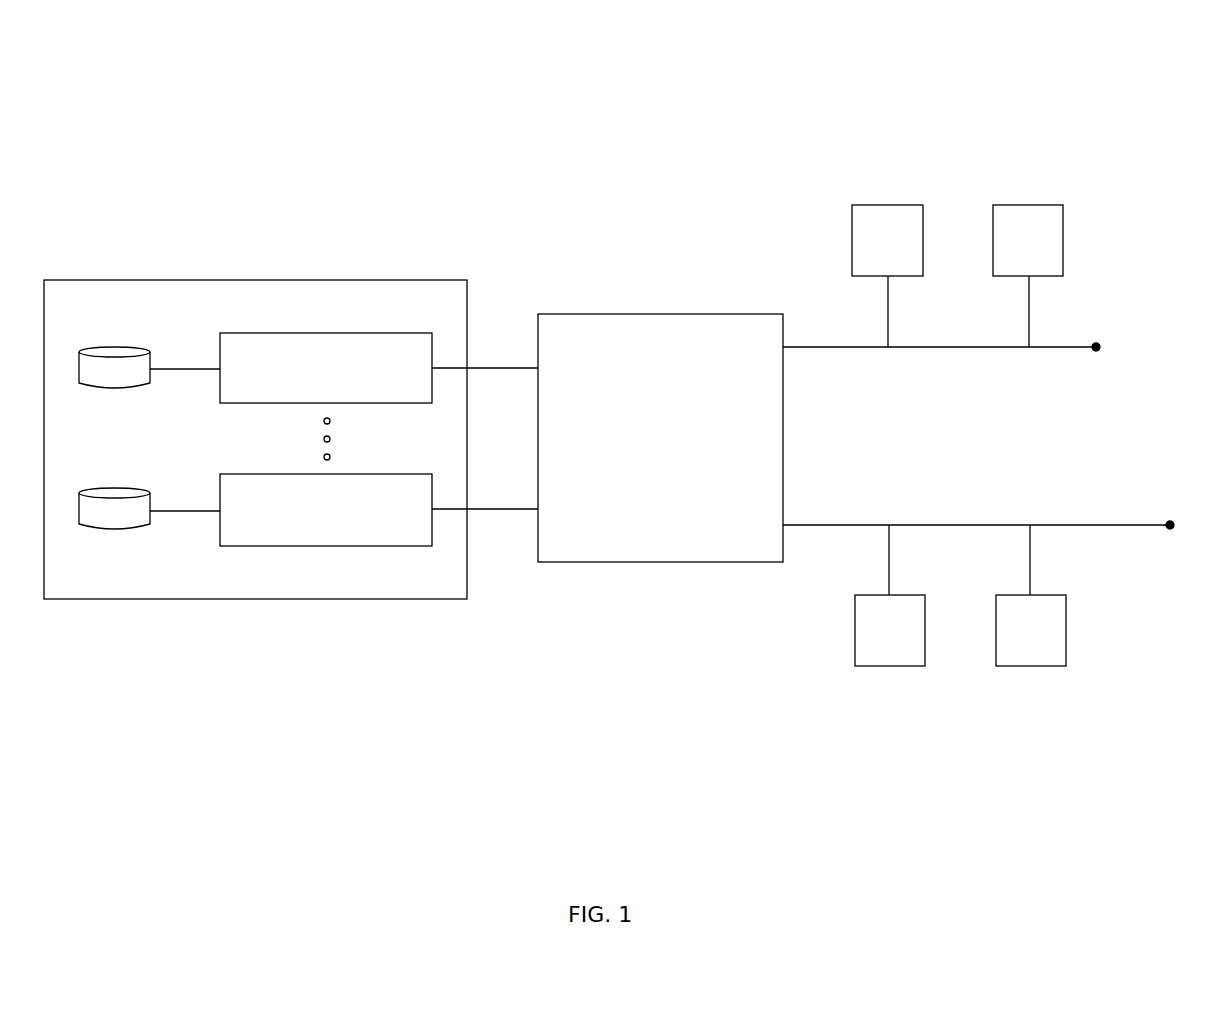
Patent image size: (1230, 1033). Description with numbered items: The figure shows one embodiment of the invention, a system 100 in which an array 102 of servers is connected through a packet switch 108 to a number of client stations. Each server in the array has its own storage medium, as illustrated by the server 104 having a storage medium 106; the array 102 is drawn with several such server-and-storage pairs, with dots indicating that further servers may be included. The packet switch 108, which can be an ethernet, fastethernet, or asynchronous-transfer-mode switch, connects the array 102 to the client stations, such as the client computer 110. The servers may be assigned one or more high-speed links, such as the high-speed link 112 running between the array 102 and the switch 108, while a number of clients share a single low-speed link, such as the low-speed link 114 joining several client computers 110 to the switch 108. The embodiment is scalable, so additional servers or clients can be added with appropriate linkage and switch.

The system 100 is at (1070, 106).
The array of servers 102 is at (221, 582).
The server 104 is at (290, 352).
The storage medium 106 is at (115, 356).
The server 108 is at (616, 330).
The client computer 110 is at (890, 657).
The high-speed link 112 is at (485, 509).
The low-speed link 114 is at (872, 525).